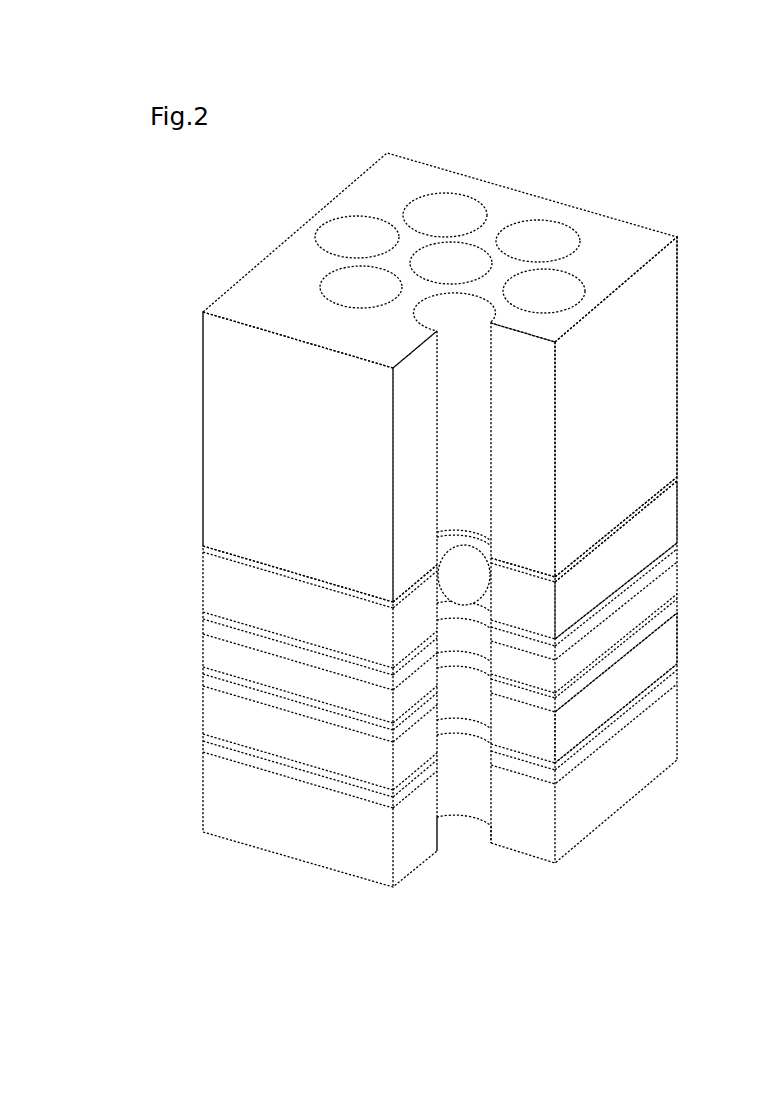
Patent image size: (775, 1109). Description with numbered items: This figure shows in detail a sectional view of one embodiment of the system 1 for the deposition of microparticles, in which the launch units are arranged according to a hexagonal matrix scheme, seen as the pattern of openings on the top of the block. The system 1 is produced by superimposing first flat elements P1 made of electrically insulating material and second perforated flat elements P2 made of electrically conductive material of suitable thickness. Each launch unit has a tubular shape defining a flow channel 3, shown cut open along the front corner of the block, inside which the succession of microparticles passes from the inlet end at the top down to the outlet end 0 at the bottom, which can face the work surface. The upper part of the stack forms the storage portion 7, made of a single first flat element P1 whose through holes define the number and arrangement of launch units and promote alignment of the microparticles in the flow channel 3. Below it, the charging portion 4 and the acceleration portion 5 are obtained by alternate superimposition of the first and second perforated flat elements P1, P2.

The system for the deposition of microparticles 1 is at (178, 368).
The flow channel 3 is at (466, 409).
The storage portion 7 is at (628, 393).
The charging portion 4 is at (688, 504).
The acceleration portion 5 is at (688, 638).
The first flat element P1 is at (222, 516).
The second perforated flat element P2 is at (678, 478).
The channel bottom 0 is at (463, 830).